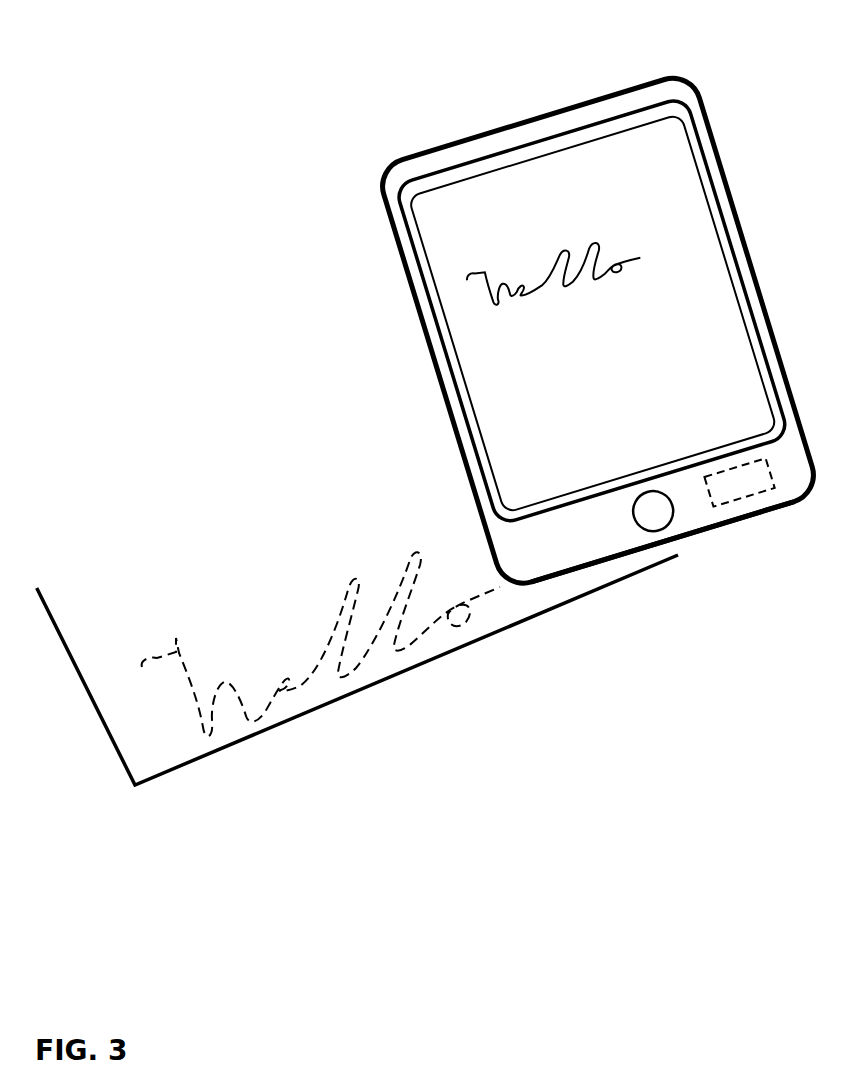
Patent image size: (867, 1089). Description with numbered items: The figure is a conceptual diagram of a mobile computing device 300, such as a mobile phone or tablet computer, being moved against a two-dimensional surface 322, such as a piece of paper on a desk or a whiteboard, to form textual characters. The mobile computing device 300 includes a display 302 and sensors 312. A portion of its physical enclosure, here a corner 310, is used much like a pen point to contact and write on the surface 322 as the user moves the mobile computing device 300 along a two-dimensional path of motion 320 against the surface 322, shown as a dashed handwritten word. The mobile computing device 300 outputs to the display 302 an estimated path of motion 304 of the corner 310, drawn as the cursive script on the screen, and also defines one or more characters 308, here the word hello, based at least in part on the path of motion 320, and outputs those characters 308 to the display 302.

The mobile computing device 300 is at (614, 372).
The display 302 is at (726, 243).
The estimated path of motion 304 is at (530, 274).
The characters 308 is at (553, 338).
The corner of the physical enclosure 310 is at (517, 592).
The sensors 312 is at (745, 498).
The path of motion 320 is at (408, 553).
The two-dimensional surface 322 is at (152, 753).